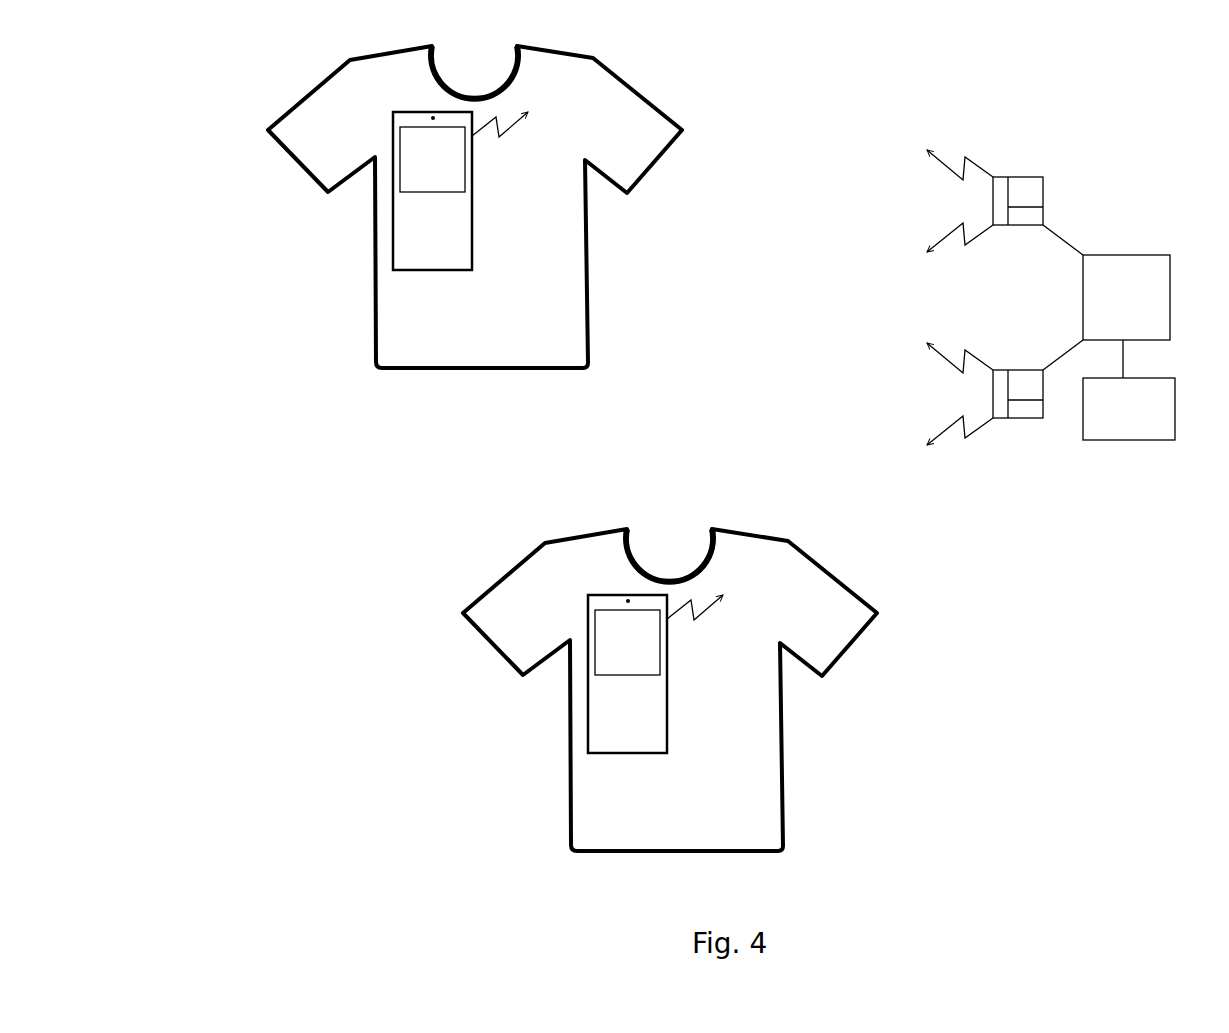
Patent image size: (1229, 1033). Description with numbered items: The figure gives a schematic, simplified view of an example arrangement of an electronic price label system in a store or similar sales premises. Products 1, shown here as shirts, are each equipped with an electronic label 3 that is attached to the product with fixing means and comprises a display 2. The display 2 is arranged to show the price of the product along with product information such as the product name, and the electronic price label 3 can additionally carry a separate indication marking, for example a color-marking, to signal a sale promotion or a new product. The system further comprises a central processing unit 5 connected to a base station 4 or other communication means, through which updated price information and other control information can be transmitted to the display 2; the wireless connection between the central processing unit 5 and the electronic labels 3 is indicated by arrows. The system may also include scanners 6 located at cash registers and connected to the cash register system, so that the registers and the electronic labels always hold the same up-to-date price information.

The product 1 is at (343, 147).
The display 2 is at (423, 182).
The electronic label 3 is at (423, 248).
The base station 4 is at (1027, 190).
The central processing unit 5 is at (1152, 270).
The scanner 6 is at (1153, 420).